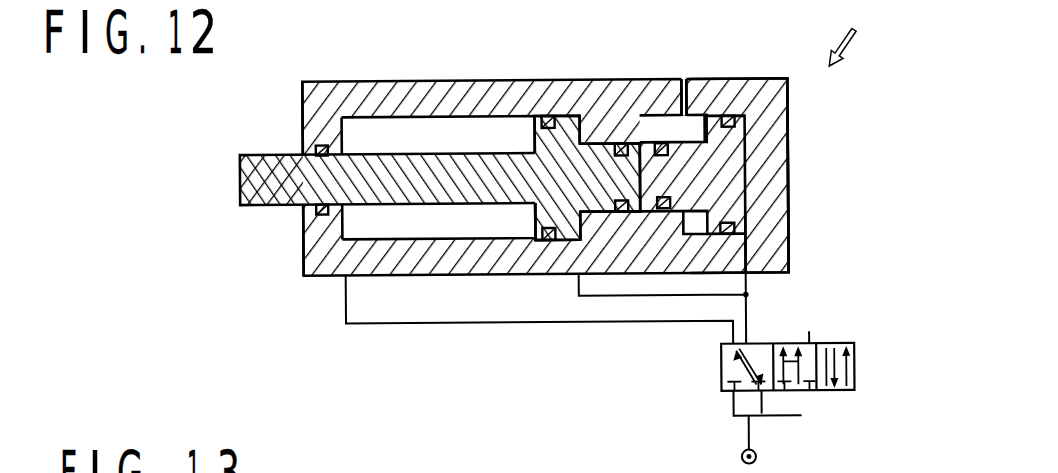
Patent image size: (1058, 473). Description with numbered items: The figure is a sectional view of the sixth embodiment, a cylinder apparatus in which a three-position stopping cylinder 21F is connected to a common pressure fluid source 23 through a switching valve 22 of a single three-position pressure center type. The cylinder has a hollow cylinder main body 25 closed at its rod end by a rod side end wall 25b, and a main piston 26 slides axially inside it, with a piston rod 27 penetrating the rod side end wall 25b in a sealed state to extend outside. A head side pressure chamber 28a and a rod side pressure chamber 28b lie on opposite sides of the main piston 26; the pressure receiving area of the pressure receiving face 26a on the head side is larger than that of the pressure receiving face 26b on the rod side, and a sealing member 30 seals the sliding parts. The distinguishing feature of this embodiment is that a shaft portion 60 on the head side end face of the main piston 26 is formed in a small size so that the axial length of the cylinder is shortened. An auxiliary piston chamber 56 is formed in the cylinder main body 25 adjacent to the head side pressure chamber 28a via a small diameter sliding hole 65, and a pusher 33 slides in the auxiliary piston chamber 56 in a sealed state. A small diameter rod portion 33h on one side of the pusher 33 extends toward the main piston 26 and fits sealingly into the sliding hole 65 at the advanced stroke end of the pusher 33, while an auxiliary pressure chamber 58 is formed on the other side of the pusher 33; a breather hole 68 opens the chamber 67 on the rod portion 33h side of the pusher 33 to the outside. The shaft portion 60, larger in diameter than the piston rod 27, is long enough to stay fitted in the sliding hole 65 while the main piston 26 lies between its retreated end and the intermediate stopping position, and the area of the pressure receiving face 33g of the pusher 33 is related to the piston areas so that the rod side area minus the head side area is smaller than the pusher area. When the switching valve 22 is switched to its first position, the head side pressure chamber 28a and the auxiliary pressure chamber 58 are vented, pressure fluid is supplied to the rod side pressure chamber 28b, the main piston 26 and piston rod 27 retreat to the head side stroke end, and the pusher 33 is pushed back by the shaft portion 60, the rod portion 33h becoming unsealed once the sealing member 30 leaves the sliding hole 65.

The cylinder main body 25 is at (476, 100).
The rod side end wall 25b is at (324, 118).
The rod side pressure chamber 28b is at (423, 126).
The head side pressure chamber 28a is at (576, 116).
The piston rod 27 is at (270, 152).
The main piston 26 is at (546, 116).
The shaft portion 60 is at (598, 168).
The pressure receiving face on the rod side 26b is at (530, 242).
The pressure receiving face on the head side 26a is at (582, 242).
The sealing member 30 is at (317, 214).
The small diameter rod portion 33h is at (692, 236).
The small diameter sliding hole 65 is at (603, 214).
The 3-position stopping cylinder 21F is at (653, 80).
The pusher 33 is at (775, 160).
The pressure receiving face of the pusher 33g is at (788, 178).
The breather hole 68 is at (698, 116).
The auxiliary piston chamber 56 is at (730, 118).
The auxiliary pressure chamber 58 is at (750, 216).
The chamber 67 is at (752, 274).
The switching valve 22 is at (808, 333).
The pressure fluid source 23 is at (754, 458).